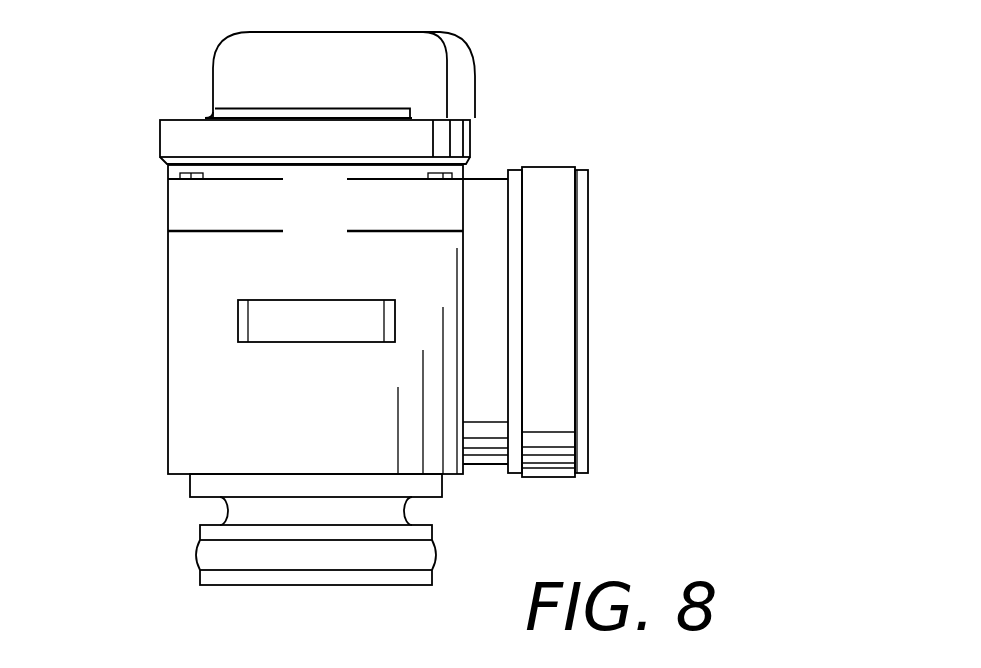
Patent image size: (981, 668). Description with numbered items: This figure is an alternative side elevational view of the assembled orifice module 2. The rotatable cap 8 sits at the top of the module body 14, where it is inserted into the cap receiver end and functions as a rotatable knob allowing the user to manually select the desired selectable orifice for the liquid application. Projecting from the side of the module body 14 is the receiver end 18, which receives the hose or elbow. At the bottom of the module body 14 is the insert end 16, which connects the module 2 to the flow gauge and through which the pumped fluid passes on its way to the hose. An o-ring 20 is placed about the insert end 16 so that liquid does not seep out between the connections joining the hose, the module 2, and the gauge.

The orifice module 2 is at (671, 76).
The rotatable cap 8 is at (222, 43).
The module body 14 is at (167, 281).
The insert end 16 is at (207, 588).
The receiver end 18 is at (590, 300).
The o-ring 20 is at (198, 552).